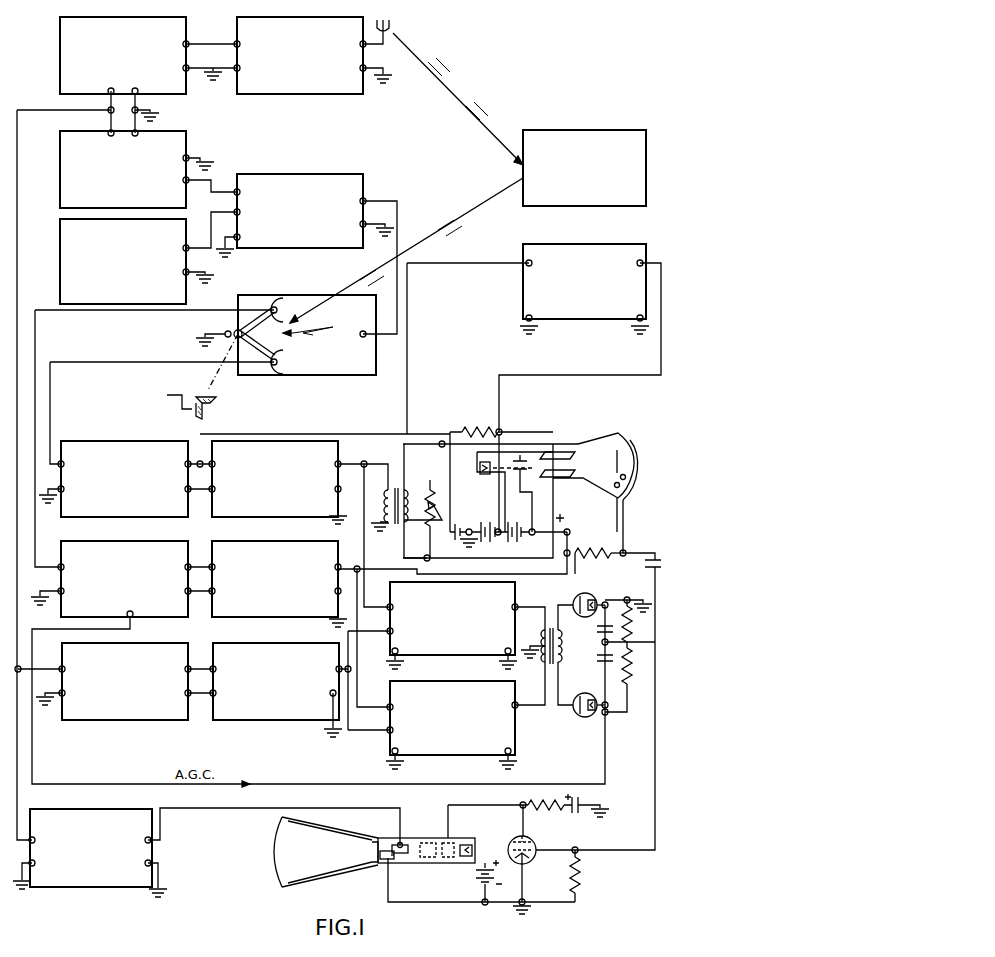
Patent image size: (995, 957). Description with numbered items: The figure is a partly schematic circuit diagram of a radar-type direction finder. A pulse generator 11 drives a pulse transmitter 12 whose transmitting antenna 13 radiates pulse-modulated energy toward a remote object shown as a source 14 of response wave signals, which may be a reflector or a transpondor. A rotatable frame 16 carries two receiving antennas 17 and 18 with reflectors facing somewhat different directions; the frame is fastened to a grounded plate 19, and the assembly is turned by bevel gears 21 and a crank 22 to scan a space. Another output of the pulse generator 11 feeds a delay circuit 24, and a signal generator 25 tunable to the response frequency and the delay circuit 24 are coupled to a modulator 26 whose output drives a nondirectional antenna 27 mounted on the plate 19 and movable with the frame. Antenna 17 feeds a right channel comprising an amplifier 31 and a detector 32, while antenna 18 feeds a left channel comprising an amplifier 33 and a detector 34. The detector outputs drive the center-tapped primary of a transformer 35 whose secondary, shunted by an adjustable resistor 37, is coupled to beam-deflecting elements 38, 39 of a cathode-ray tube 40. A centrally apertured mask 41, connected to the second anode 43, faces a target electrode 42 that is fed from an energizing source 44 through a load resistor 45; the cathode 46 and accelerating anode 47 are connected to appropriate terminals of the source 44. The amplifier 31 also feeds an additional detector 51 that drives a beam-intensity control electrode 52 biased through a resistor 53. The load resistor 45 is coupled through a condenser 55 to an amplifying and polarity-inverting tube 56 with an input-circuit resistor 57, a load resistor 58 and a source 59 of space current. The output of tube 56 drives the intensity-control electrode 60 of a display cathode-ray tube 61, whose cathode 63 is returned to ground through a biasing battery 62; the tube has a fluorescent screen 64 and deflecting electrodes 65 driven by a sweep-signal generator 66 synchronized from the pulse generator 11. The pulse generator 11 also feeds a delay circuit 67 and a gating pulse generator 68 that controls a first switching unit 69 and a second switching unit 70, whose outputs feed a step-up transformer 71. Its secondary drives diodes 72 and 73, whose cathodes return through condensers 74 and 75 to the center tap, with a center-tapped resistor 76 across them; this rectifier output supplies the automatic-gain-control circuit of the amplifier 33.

The pulse generator 11 is at (60, 51).
The pulse transmitter 12 is at (237, 32).
The transmitting antenna 13 is at (394, 41).
The source of response wave signals 14 is at (586, 126).
The rotatable frame 16 is at (236, 328).
The wave-signal receiving antenna 17 is at (274, 374).
The wave-signal receiving antenna 18 is at (277, 305).
The rotatable grounded plate 19 is at (318, 380).
The bevel gears 21 is at (204, 403).
The crank 22 is at (180, 394).
The delay circuit 24 is at (185, 152).
The signal generator 25 is at (58, 270).
The modulator 26 is at (296, 174).
The wave-signal translator or radiator 27 is at (370, 334).
The amplifier 31 is at (130, 438).
The detector 32 is at (292, 438).
The amplifier 33 is at (147, 623).
The detector 34 is at (256, 538).
The transformer 35 is at (388, 504).
The adjustable resistor 37 is at (424, 505).
The beam-deflecting element 38 is at (559, 452).
The beam-deflecting element 39 is at (559, 481).
The cathode-ray tube 40 is at (605, 435).
The centrally apertured mask 41 is at (608, 452).
The target electrode 42 is at (630, 450).
The second anode 43 is at (519, 478).
The energizing source 44 is at (508, 548).
The load resistor 45 is at (604, 573).
The cathode 46 is at (470, 462).
The accelerating anode 47 is at (498, 478).
The additional detector 51 is at (520, 292).
The beam-intensity control electrode 52 is at (502, 456).
The resistor 53 is at (479, 421).
The condenser 55 is at (659, 558).
The amplifying and polarity-inverting tube 56 is at (508, 848).
The input-circuit resistor 57 is at (570, 870).
The load resistor 58 is at (532, 800).
The source of space current 59 is at (586, 796).
The intensity-control electrode 60 is at (446, 840).
The cathode-ray tube 61 is at (360, 864).
The biasing battery 62 is at (477, 872).
The cathode 63 is at (462, 844).
The fluorescent display screen 64 is at (274, 860).
The deflecting electrodes 65 is at (390, 844).
The sweep-signal generator 66 is at (156, 844).
The delay circuit 67 is at (88, 723).
The gating pulse generator 68 is at (244, 723).
The first switching unit 69 is at (426, 660).
The second switching unit 70 is at (426, 761).
The transformer 71 is at (537, 663).
The diode 72 is at (572, 600).
The diode 73 is at (585, 687).
The condenser 74 is at (594, 630).
The condenser 75 is at (594, 656).
The center-tapped resistor 76 is at (640, 640).